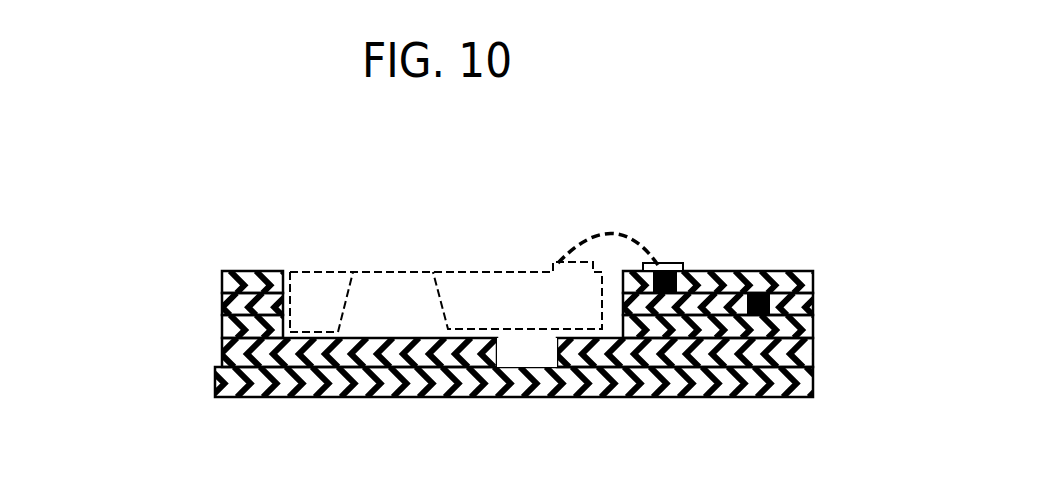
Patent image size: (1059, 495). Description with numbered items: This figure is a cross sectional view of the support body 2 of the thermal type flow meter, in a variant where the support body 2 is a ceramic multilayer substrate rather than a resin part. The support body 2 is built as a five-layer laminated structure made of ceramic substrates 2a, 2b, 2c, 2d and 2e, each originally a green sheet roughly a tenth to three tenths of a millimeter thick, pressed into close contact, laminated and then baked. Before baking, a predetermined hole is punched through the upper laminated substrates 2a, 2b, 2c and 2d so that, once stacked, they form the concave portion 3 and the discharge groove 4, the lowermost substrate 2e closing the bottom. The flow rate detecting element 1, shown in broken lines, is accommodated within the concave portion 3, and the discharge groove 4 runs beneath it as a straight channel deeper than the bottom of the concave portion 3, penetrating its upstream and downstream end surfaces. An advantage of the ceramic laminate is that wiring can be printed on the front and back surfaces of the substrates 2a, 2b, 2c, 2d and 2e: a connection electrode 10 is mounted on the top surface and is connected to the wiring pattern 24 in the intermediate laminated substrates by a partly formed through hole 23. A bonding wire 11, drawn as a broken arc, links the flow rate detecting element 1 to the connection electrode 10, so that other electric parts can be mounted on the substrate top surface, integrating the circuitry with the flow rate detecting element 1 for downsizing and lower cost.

The flow rate detecting element 1 is at (338, 283).
The support body 2 is at (92, 477).
The ceramic substrate 2a is at (222, 288).
The ceramic substrate 2b is at (222, 304).
The ceramic substrate 2c is at (222, 330).
The ceramic substrate 2d is at (222, 356).
The ceramic substrate 2e is at (222, 398).
The concave portion 3 is at (285, 271).
The discharge groove 4 is at (520, 348).
The connection electrode 10 is at (663, 263).
The bonding wire 11 is at (617, 232).
The through hole 23 is at (697, 277).
The wiring pattern 24 is at (800, 275).